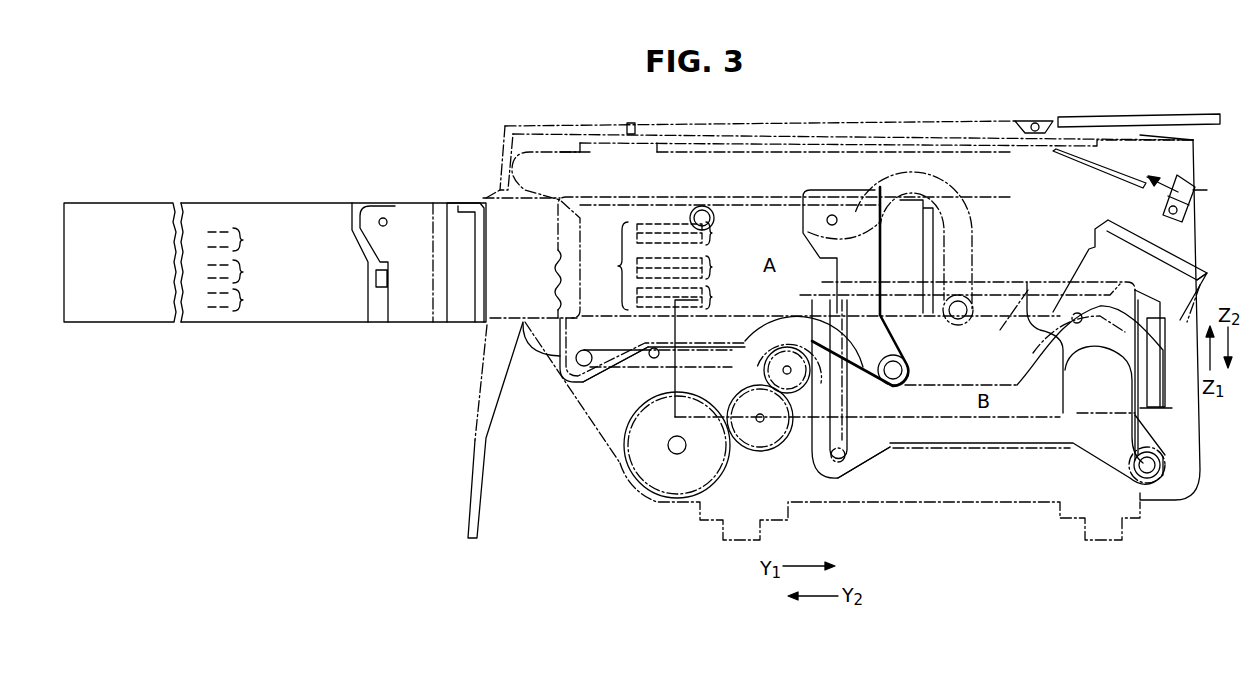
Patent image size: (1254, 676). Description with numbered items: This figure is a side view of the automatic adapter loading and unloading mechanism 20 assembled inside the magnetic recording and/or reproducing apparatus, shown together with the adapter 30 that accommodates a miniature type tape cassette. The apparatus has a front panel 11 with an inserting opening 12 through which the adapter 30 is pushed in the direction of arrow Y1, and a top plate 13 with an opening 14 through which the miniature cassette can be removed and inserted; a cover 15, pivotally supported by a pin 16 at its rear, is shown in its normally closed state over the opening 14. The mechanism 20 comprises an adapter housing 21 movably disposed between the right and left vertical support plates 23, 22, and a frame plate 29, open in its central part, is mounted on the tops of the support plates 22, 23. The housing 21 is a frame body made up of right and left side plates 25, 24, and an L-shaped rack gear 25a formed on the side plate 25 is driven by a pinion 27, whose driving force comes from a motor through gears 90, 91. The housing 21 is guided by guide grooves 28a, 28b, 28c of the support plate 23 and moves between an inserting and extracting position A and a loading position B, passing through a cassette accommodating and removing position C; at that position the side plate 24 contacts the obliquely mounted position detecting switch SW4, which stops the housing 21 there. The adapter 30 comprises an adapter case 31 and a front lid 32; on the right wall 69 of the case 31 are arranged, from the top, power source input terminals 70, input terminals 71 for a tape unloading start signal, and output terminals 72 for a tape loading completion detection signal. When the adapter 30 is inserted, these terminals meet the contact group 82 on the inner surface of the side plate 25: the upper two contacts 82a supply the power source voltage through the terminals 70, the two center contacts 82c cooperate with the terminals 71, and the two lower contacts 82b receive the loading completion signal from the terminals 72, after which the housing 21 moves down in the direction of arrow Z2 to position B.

The front panel 11 is at (478, 422).
The inserting opening 12 is at (525, 320).
The top plate 13 is at (1114, 116).
The opening 14 is at (636, 123).
The cover 15 is at (838, 124).
The pin 16 is at (1033, 123).
The loading and unloading mechanism 20 is at (1079, 104).
The adapter housing 21 is at (795, 185).
The left vertical support plate 22 is at (880, 501).
The right vertical support plate 23 is at (907, 503).
The left side plate 24 is at (823, 320).
The right side plate 25 is at (700, 195).
The L-shaped rack gear 25a is at (630, 367).
The pinion 27 is at (757, 373).
The guide groove 28a is at (958, 195).
The guide groove 28b is at (845, 356).
The guide groove 28c is at (1023, 353).
The frame plate 29 is at (1165, 135).
The adapter 30 is at (543, 320).
The adapter case 31 is at (172, 203).
The front lid 32 is at (416, 203).
The right wall 69 is at (130, 322).
The power source input terminals 70 is at (238, 239).
The input terminals 71 is at (238, 271).
The output terminals 72 is at (238, 300).
The contact group 82 is at (826, 311).
The upper two contacts 82a is at (810, 232).
The two lower contacts 82b is at (817, 297).
The two center contacts 82c is at (694, 267).
The gear 90 is at (637, 450).
The gear 91 is at (765, 448).
The position detecting switch SW4 is at (1138, 190).